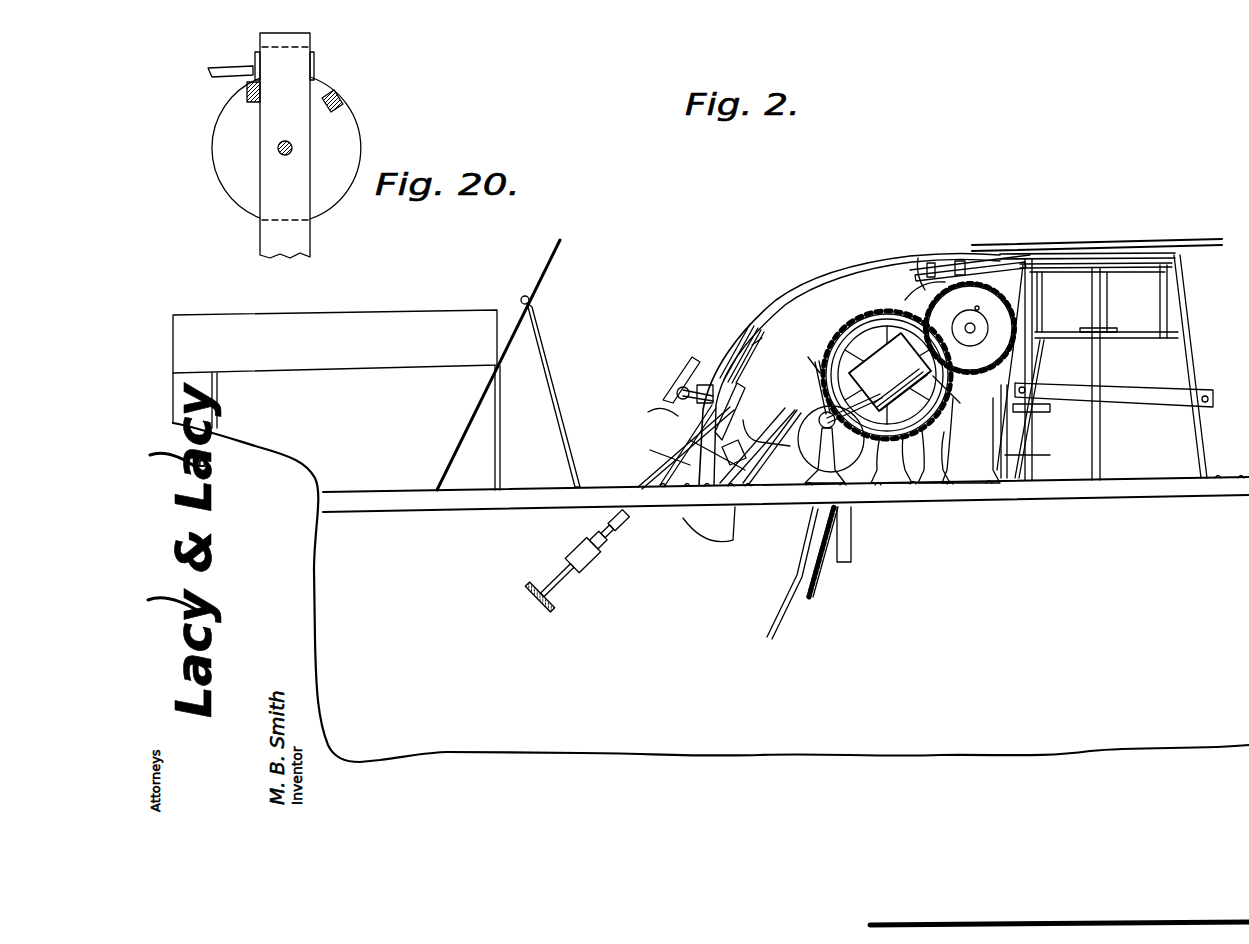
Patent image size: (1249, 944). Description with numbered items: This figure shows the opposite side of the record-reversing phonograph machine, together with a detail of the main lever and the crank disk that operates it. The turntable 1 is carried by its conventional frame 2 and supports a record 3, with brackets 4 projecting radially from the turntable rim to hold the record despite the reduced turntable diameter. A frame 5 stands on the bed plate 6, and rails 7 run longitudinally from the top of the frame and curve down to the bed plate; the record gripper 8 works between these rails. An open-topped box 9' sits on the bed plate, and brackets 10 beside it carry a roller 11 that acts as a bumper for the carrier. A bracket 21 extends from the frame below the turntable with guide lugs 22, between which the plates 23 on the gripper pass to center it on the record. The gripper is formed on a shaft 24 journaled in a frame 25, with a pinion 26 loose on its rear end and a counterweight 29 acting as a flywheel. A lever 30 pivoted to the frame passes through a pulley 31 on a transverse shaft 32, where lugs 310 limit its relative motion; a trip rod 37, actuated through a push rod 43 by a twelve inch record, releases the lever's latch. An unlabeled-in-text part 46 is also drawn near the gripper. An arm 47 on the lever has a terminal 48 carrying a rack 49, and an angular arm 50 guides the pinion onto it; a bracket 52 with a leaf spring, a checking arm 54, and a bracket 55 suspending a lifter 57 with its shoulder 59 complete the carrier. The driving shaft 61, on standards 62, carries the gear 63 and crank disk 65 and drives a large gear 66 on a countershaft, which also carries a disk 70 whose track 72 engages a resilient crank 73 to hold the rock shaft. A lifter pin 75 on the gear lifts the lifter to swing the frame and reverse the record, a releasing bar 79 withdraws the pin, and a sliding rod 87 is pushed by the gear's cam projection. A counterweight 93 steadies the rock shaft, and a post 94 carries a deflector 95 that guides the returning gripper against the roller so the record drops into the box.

In FIG. 2, the turntable 1 is at (1178, 248).
In FIG. 2, the frame 2 is at (1167, 304).
In FIG. 2, the record 3 is at (1203, 241).
In FIG. 2, the brackets 4 is at (998, 252).
In FIG. 2, the frame 5 is at (1193, 346).
In FIG. 2, the bed plate 6 is at (1028, 487).
In FIG. 2, the rails 7 is at (809, 288).
In FIG. 2, the record gripper 8 is at (749, 326).
In FIG. 2, the box or casing 9' is at (336, 400).
In FIG. 2, the brackets 10 is at (542, 354).
In FIG. 2, the roller 11 is at (523, 298).
In FIG. 2, the bracket 21 is at (938, 270).
In FIG. 2, the guide lugs 22 is at (930, 262).
In FIG. 2, the plates 23 is at (692, 364).
In FIG. 2, the shaft 24 is at (570, 593).
In FIG. 2, the frame 25 is at (661, 456).
In FIG. 2, the pinion 26 is at (570, 627).
In FIG. 2, the counterweight 29 is at (582, 558).
In FIG. 20, the lever 30 is at (296, 82).
In FIG. 2, the lever 30 is at (744, 433).
In FIG. 20, the pulley or disk 31 is at (344, 131).
In FIG. 2, the pulley or disk 31 is at (813, 438).
In FIG. 20, the shaft 32 is at (278, 148).
In FIG. 2, the shaft 32 is at (840, 438).
In FIG. 2, the trip rod 37 is at (812, 383).
In FIG. 2, the push rod 43 is at (1104, 374).
In FIG. 2, the arm 46 is at (763, 338).
In FIG. 2, the arm 47 is at (765, 480).
In FIG. 2, the terminal 48 is at (840, 548).
In FIG. 2, the rack 49 is at (811, 598).
In FIG. 2, the angular arm 50 is at (774, 610).
In FIG. 2, the bracket 52 is at (664, 404).
In FIG. 2, the checking arm 54 is at (683, 447).
In FIG. 2, the bracket 55 is at (688, 433).
In FIG. 2, the lifter 57 is at (712, 525).
In FIG. 2, the shoulder 59 is at (737, 411).
In FIG. 2, the driving shaft 61 is at (983, 334).
In FIG. 2, the standards or posts 62 is at (972, 445).
In FIG. 2, the gear 63 is at (1000, 338).
In FIG. 2, the crank disk 65 is at (920, 288).
In FIG. 2, the gear 66 is at (850, 321).
In FIG. 2, the disk 70 is at (893, 425).
In FIG. 2, the track 72 is at (971, 440).
In FIG. 2, the resilient crank 73 is at (818, 371).
In FIG. 2, the lifter pin 75 is at (883, 453).
In FIG. 2, the releasing bar 79 is at (912, 296).
In FIG. 2, the rod 87 is at (927, 440).
In FIG. 2, the counterweight 93 is at (893, 378).
In FIG. 2, the post 94 is at (745, 520).
In FIG. 2, the deflector 95 is at (705, 384).
In FIG. 20, the lugs 310 is at (247, 86).